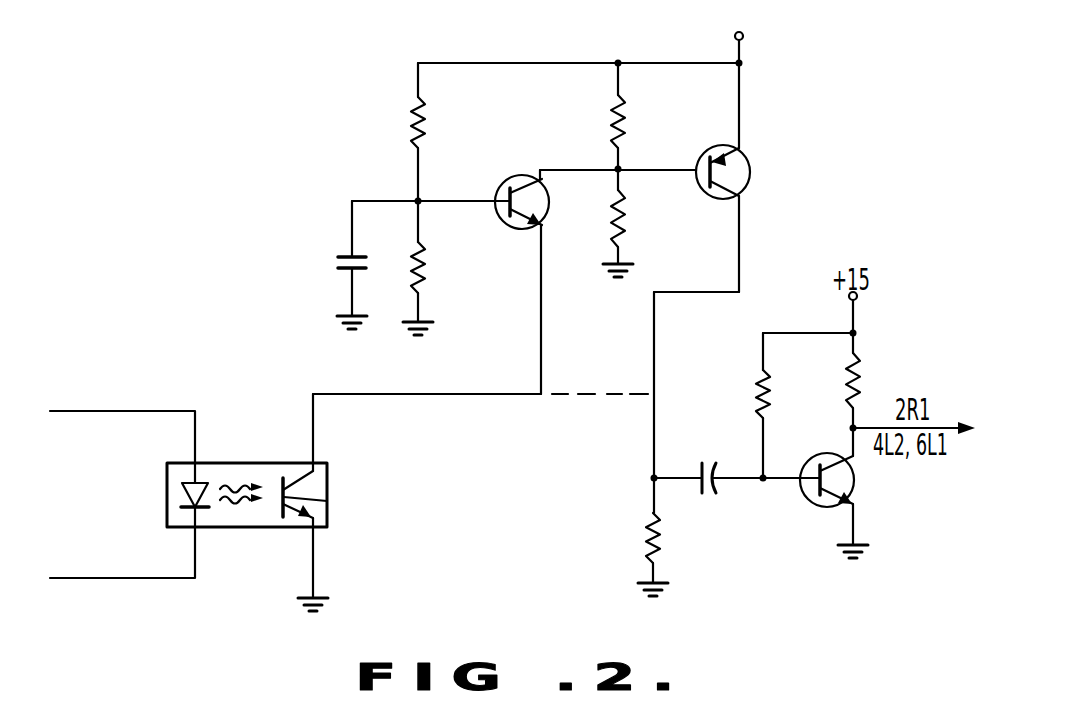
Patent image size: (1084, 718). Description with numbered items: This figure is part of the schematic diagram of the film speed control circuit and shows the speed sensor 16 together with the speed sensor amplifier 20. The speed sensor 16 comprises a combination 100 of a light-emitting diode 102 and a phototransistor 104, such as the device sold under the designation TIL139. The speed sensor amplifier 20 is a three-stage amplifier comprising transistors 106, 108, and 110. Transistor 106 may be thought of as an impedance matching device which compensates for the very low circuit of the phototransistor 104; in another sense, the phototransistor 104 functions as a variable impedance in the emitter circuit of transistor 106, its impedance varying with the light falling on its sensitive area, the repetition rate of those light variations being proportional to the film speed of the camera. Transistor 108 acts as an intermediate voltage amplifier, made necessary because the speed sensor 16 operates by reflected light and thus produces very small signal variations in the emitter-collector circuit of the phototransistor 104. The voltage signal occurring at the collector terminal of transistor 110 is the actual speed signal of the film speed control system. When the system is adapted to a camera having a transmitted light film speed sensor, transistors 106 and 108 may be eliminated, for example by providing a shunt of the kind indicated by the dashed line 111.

The speed sensor 16 is at (225, 388).
The speed sensor amplifier 20 is at (328, 121).
The combination 100 is at (322, 482).
The light-emitting diode 102 is at (187, 490).
The phototransistor 104 is at (327, 501).
The transistor 106 is at (524, 168).
The transistor 108 is at (748, 153).
The transistor 110 is at (821, 507).
The dashed line 111 is at (612, 395).